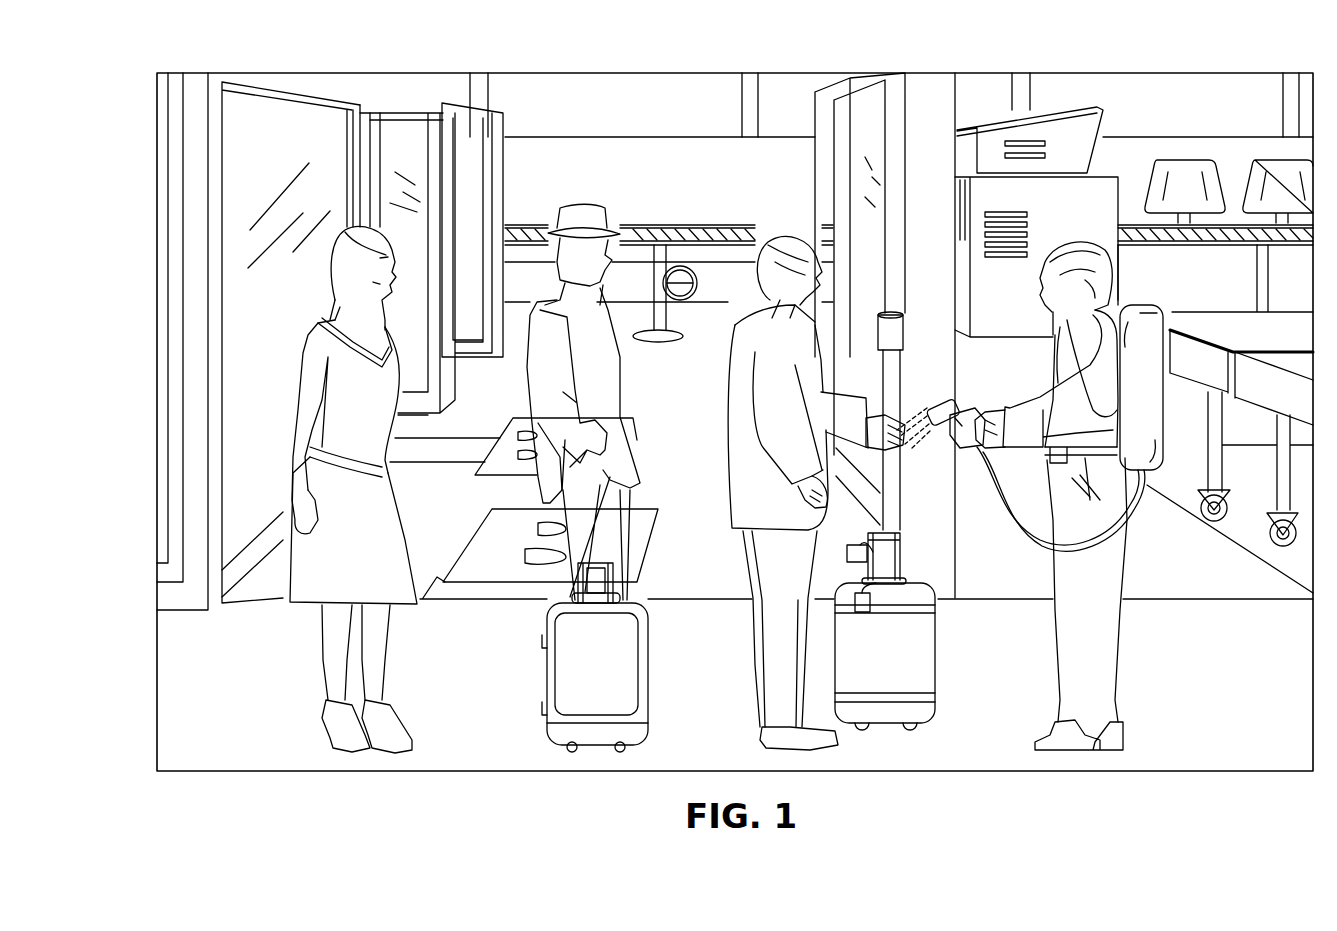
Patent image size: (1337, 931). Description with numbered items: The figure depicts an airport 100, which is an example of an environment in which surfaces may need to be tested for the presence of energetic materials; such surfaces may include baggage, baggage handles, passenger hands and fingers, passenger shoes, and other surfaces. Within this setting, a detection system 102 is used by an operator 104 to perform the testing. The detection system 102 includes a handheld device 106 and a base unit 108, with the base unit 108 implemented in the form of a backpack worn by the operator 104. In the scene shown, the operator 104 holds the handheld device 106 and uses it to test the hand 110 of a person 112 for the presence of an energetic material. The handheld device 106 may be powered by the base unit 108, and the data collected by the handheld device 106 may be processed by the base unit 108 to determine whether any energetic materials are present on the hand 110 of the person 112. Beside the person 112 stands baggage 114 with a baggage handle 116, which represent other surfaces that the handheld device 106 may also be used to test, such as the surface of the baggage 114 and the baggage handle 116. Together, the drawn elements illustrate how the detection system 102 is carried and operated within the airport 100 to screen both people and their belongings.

The airport 100 is at (413, 69).
The detection system 102 is at (1167, 307).
The operator 104 is at (1033, 470).
The handheld device 106 is at (970, 408).
The base unit 108 is at (1137, 300).
The hand 110 is at (878, 413).
The person 112 is at (816, 467).
The baggage 114 is at (917, 631).
The baggage handle 116 is at (900, 553).